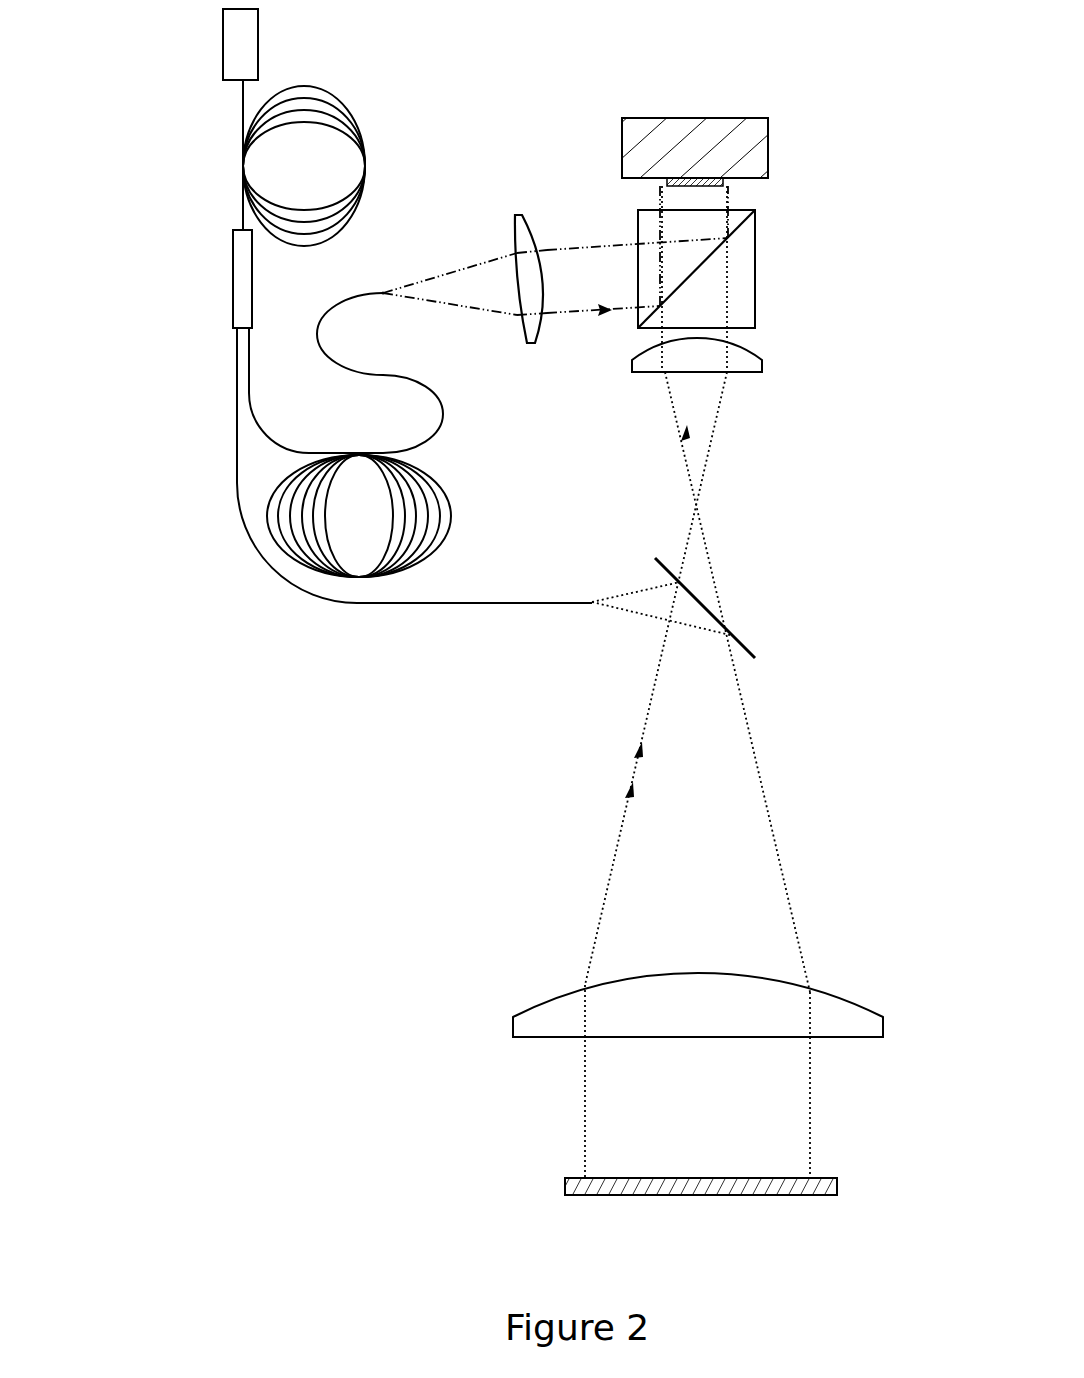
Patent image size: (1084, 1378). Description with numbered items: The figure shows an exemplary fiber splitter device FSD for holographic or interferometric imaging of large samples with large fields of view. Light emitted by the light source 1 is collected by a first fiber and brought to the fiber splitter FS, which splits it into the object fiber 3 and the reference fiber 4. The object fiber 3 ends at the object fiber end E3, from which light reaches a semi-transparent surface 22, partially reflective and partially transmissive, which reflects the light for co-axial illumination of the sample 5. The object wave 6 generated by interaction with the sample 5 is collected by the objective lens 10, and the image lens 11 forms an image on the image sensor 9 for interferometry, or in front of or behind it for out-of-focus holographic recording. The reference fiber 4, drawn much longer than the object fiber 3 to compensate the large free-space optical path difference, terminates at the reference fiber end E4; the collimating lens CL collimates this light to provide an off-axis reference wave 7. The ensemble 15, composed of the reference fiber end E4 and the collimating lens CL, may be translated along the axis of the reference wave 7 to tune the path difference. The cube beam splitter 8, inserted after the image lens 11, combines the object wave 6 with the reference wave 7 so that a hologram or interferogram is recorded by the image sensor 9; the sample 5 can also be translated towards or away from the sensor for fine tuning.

The light source 1 is at (233, 45).
The fiber splitter FS is at (237, 285).
The reference fiber 4 is at (443, 408).
The reference fiber end E4 is at (386, 300).
The object fiber 3 is at (380, 605).
The fiber splitter device FSD is at (230, 581).
The object fiber end E3 is at (590, 605).
The ensemble 15 is at (542, 218).
The reference wave 7 is at (578, 245).
The collimating lens CL is at (532, 347).
The cube beam splitter 8 is at (745, 260).
The image sensor 9 is at (728, 178).
The image lens 11 is at (742, 360).
The object wave 6 is at (715, 555).
The semi-transparent surface 22 is at (750, 647).
The objective lens 10 is at (540, 1017).
The sample 5 is at (565, 1183).